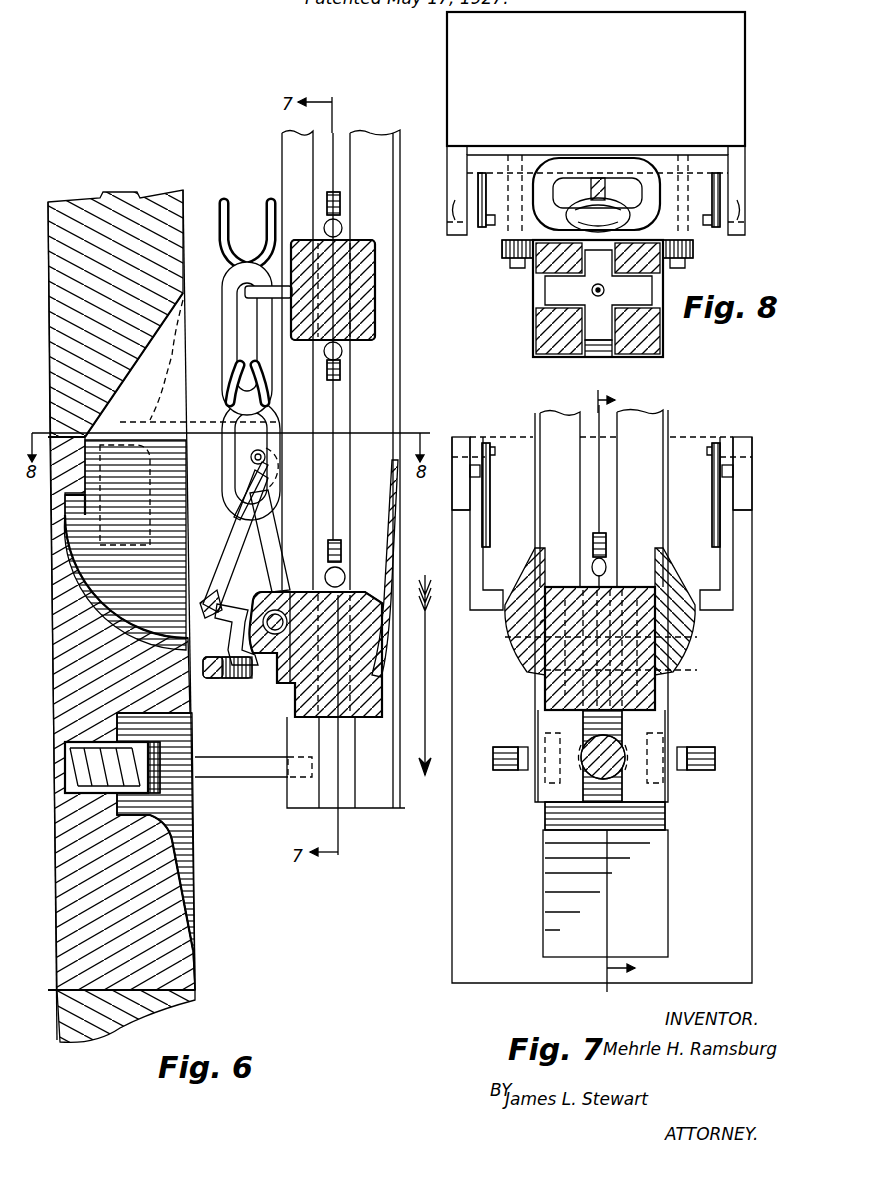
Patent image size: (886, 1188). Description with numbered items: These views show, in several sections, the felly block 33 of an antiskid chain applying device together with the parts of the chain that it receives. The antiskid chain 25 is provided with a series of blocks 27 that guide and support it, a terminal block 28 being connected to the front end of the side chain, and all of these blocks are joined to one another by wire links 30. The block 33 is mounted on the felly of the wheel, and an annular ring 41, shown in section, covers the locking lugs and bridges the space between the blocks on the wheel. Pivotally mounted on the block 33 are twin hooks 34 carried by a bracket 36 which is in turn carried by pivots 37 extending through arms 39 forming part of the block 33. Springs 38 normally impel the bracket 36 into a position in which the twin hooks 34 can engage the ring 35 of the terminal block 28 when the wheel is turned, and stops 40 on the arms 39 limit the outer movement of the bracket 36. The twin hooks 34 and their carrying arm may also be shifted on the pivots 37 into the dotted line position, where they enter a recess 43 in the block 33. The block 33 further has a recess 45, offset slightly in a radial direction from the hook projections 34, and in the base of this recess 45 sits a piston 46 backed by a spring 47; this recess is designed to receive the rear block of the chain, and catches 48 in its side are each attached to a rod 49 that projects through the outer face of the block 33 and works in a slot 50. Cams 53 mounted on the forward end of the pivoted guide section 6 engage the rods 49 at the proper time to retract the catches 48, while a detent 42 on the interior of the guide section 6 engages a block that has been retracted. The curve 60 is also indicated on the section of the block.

In FIG. 6, the pivoted guide section 6 is at (375, 808).
In FIG. 8, the pivoted guide section 6 is at (535, 350).
In FIG. 7, the pivoted guide section 6 is at (548, 503).
In FIG. 6, the antiskid chain 25 is at (218, 198).
In FIG. 6, the block 27 is at (368, 302).
In FIG. 8, the block 27 is at (652, 290).
In FIG. 6, the terminal block 28 is at (268, 685).
In FIG. 8, the terminal block 28 is at (555, 292).
In FIG. 7, the terminal block 28 is at (657, 702).
In FIG. 6, the wire link 30 is at (341, 178).
In FIG. 7, the wire link 30 is at (603, 488).
In FIG. 6, the felly block 33 is at (180, 965).
In FIG. 8, the felly block 33 is at (596, 79).
In FIG. 7, the felly block 33 is at (602, 710).
In FIG. 6, the twin hooks 34 is at (85, 520).
In FIG. 8, the twin hooks 34 is at (632, 178).
In FIG. 7, the twin hooks 34 is at (548, 640).
In FIG. 6, the ring 35 is at (63, 515).
In FIG. 8, the ring 35 is at (558, 165).
In FIG. 7, the ring 35 is at (545, 690).
In FIG. 6, the bracket 36 is at (165, 445).
In FIG. 8, the bracket 36 is at (700, 160).
In FIG. 7, the bracket 36 is at (735, 582).
In FIG. 6, the pivot 37 is at (266, 455).
In FIG. 8, the pivot 37 is at (447, 208).
In FIG. 7, the pivot 37 is at (468, 440).
In FIG. 6, the spring 38 is at (262, 490).
In FIG. 8, the spring 38 is at (599, 200).
In FIG. 7, the spring 38 is at (490, 490).
In FIG. 6, the arm 39 is at (52, 690).
In FIG. 8, the arm 39 is at (448, 162).
In FIG. 7, the arm 39 is at (470, 525).
In FIG. 6, the stop 40 is at (293, 467).
In FIG. 7, the stop 40 is at (470, 470).
In FIG. 6, the annular ring 41 is at (65, 278).
In FIG. 6, the detent 42 is at (390, 525).
In FIG. 6, the recess 43 is at (100, 640).
In FIG. 6, the recess 45 is at (186, 828).
In FIG. 7, the recess 45 is at (666, 817).
In FIG. 6, the piston 46 is at (90, 800).
In FIG. 7, the piston 46 is at (614, 747).
In FIG. 6, the spring 47 is at (62, 790).
In FIG. 6, the catch 48 is at (162, 786).
In FIG. 6, the rod 49 is at (235, 757).
In FIG. 8, the rod 49 is at (525, 152).
In FIG. 7, the rod 49 is at (523, 770).
In FIG. 7, the slot 50 is at (500, 770).
In FIG. 8, the cam 53 is at (503, 252).
In FIG. 7, the cam 53 is at (530, 572).
In FIG. 6, the curved edge 60 is at (190, 895).